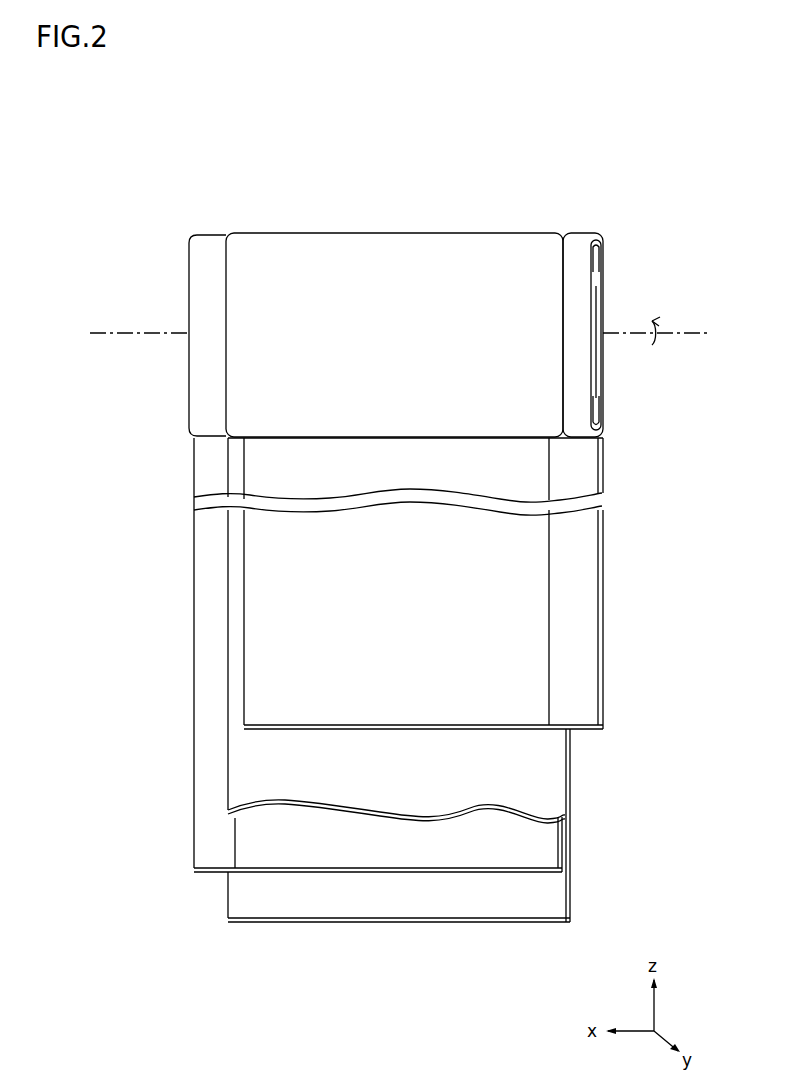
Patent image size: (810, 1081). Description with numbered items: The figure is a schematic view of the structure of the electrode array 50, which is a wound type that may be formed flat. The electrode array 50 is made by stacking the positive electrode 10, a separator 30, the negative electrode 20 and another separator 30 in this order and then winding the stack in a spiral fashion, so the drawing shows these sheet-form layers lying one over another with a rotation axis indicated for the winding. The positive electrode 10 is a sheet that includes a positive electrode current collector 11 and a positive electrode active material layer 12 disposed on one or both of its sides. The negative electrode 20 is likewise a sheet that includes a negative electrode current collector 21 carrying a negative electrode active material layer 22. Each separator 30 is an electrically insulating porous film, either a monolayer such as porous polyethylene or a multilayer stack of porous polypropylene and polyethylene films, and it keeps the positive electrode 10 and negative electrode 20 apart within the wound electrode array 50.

The electrode array 50 is at (170, 189).
The positive electrode 10 is at (707, 517).
The positive electrode current collector 11 is at (585, 610).
The positive electrode active material layer 12 is at (541, 566).
The negative electrode 20 is at (78, 725).
The negative electrode current collector 21 is at (195, 777).
The negative electrode active material layer 22 is at (275, 850).
The separator 30 is at (228, 912).